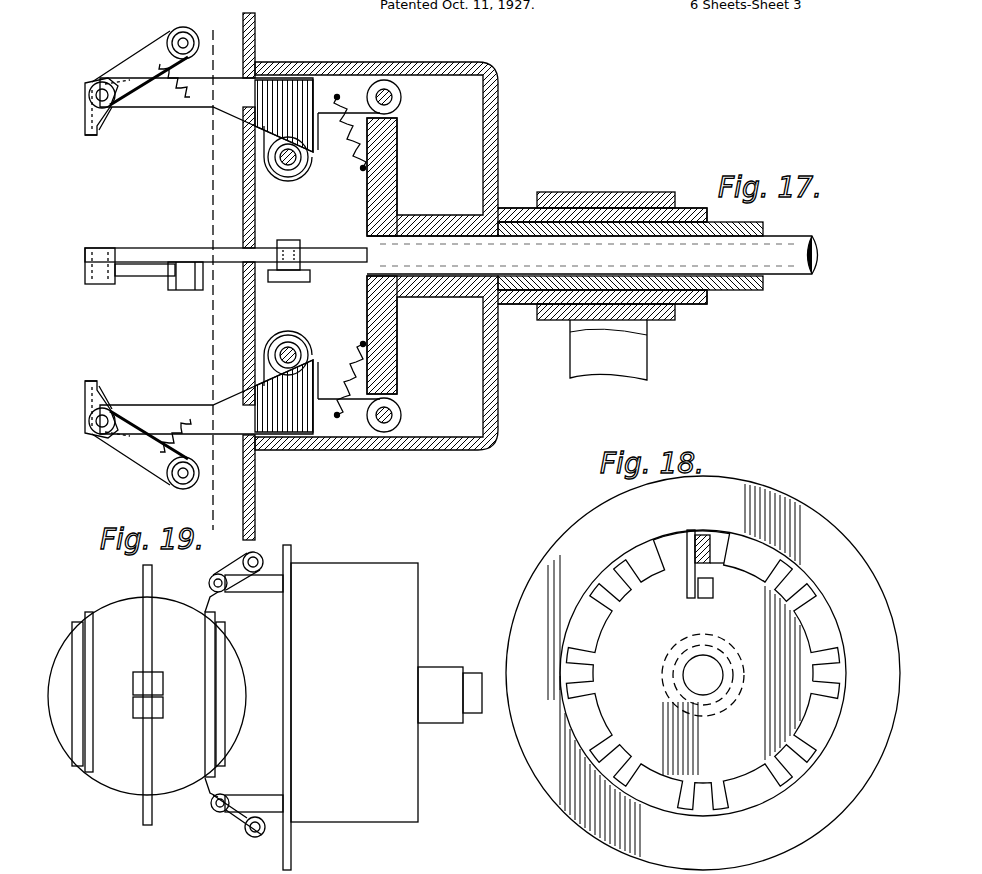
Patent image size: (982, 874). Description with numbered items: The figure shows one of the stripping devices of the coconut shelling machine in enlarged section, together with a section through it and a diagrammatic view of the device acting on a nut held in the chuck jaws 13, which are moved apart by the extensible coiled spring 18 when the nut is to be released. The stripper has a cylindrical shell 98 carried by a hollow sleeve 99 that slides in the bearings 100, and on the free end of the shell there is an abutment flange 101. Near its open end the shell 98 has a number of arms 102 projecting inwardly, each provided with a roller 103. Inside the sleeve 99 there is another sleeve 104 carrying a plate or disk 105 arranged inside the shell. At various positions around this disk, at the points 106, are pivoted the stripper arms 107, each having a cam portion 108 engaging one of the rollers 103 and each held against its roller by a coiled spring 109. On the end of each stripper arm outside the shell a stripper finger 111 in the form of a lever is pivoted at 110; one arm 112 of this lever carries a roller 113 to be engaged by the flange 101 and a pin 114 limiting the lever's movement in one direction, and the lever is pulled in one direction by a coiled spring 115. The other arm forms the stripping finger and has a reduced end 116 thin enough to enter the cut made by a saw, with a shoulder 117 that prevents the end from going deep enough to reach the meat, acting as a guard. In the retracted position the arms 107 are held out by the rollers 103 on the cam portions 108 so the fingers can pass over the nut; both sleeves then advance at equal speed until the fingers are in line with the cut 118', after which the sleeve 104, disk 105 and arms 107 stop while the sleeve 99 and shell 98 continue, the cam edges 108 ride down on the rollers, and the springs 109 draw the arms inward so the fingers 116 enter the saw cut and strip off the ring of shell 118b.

In FIG. 19, the chuck jaws 13 is at (145, 766).
In FIG. 17, the extensible coiled spring 18 is at (213, 268).
In FIG. 17, the cylindrical shell 98 is at (499, 92).
In FIG. 19, the cylindrical shell 98 is at (386, 692).
In FIG. 17, the hollow sleeve 99 is at (516, 207).
In FIG. 17, the bearings 100 is at (636, 188).
In FIG. 17, the abutment flange 101 is at (256, 37).
In FIG. 18, the abutment flange 101 is at (703, 673).
In FIG. 19, the abutment flange 101 is at (287, 707).
In FIG. 17, the arms 102 is at (268, 158).
In FIG. 18, the arms 102 is at (687, 594).
In FIG. 17, the roller 103 is at (297, 170).
In FIG. 18, the roller 103 is at (714, 599).
In FIG. 17, the sleeve 104 is at (776, 225).
In FIG. 17, the plate or disk 105 is at (406, 180).
In FIG. 18, the plate or disk 105 is at (597, 640).
In FIG. 17, the pivot points 106 is at (402, 101).
In FIG. 17, the stripper arms 107 is at (170, 248).
In FIG. 19, the stripper arms 107 is at (254, 697).
In FIG. 17, the cam portion 108 is at (252, 128).
In FIG. 18, the cam portion 108 is at (712, 573).
In FIG. 17, the coiled spring 109 is at (353, 146).
In FIG. 17, the pivot 110 is at (101, 82).
In FIG. 19, the pivot 110 is at (215, 574).
In FIG. 17, the stripper finger 111 is at (84, 106).
In FIG. 17, the lever arm 112 is at (146, 62).
In FIG. 19, the lever arm 112 is at (240, 592).
In FIG. 17, the roller 113 is at (182, 29).
In FIG. 19, the roller 113 is at (260, 554).
In FIG. 17, the pin 114 is at (118, 106).
In FIG. 17, the coiled spring 115 is at (162, 72).
In FIG. 17, the reduced end 116 is at (87, 139).
In FIG. 19, the reduced end 116 is at (205, 602).
In FIG. 17, the shoulder 117 is at (98, 137).
In FIG. 19, the cut 118' is at (186, 694).
In FIG. 19, the ring of shell 118b is at (223, 733).